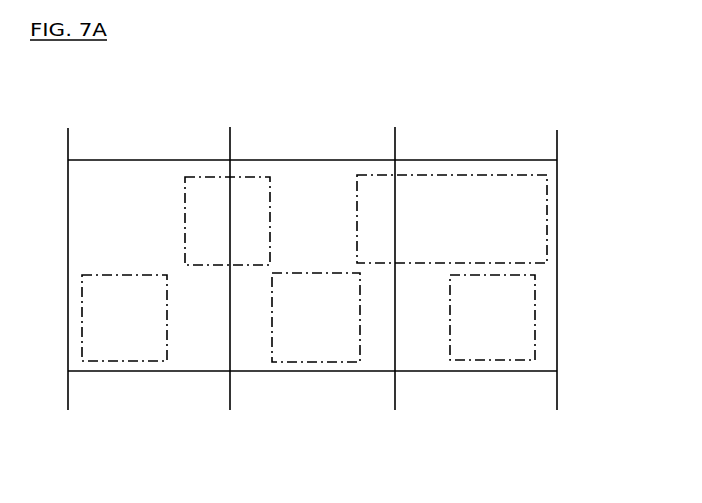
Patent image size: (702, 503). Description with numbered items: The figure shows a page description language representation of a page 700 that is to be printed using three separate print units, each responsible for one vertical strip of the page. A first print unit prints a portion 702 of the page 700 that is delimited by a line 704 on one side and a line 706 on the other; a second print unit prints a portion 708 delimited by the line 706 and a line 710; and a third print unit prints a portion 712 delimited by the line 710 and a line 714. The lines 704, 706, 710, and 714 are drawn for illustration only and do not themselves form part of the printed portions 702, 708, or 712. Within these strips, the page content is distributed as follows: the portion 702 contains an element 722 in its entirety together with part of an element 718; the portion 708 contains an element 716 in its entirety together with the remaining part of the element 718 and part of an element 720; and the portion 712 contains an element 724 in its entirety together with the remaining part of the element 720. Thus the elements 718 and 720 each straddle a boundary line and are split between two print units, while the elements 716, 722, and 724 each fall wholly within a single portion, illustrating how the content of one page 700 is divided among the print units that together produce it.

The page 700 is at (66, 257).
The portion 702 is at (163, 373).
The line 704 is at (66, 148).
The line 706 is at (228, 147).
The portion 708 is at (340, 373).
The line 710 is at (397, 145).
The portion 712 is at (485, 373).
The line 714 is at (560, 142).
The element 716 is at (342, 273).
The element 718 is at (185, 225).
The element 720 is at (482, 175).
The element 722 is at (155, 272).
The element 724 is at (535, 328).